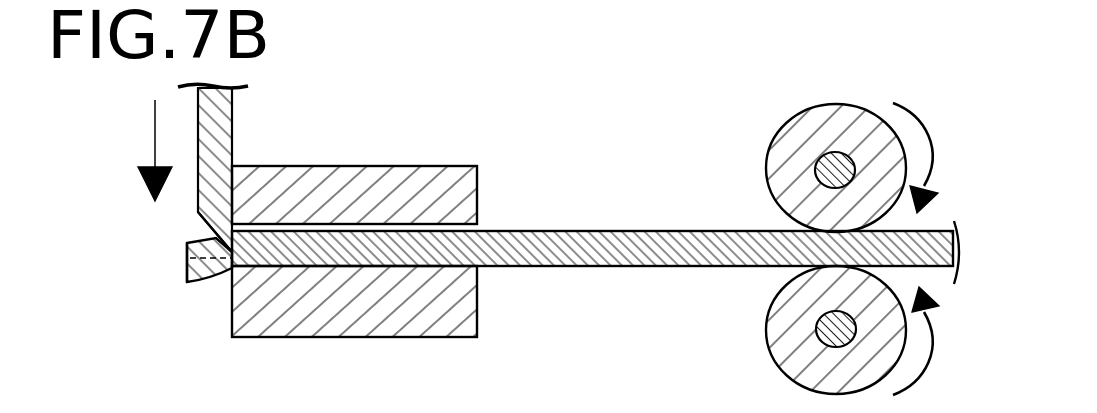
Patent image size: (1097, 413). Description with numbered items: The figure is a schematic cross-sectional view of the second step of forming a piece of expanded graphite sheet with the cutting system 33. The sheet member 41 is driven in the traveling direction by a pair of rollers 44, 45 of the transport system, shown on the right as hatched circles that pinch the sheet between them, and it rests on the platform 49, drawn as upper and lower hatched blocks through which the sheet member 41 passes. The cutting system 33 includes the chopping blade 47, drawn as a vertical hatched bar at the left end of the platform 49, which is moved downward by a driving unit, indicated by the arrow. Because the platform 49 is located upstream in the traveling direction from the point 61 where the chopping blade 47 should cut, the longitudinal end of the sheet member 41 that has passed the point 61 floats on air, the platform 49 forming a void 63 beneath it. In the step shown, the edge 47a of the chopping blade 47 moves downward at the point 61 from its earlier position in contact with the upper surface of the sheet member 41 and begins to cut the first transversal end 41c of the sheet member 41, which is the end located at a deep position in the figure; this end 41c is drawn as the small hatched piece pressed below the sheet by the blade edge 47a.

The cutting system 33 is at (367, 105).
The sheet member 41 is at (545, 231).
The first transversal end of the sheet member 41c is at (186, 276).
The roller 44 is at (766, 164).
The roller 45 is at (766, 331).
The chopping blade 47 is at (235, 115).
The edge of the chopping blade 47a is at (232, 257).
The platform 49 is at (342, 338).
The point 61 is at (187, 247).
The void 63 is at (187, 340).